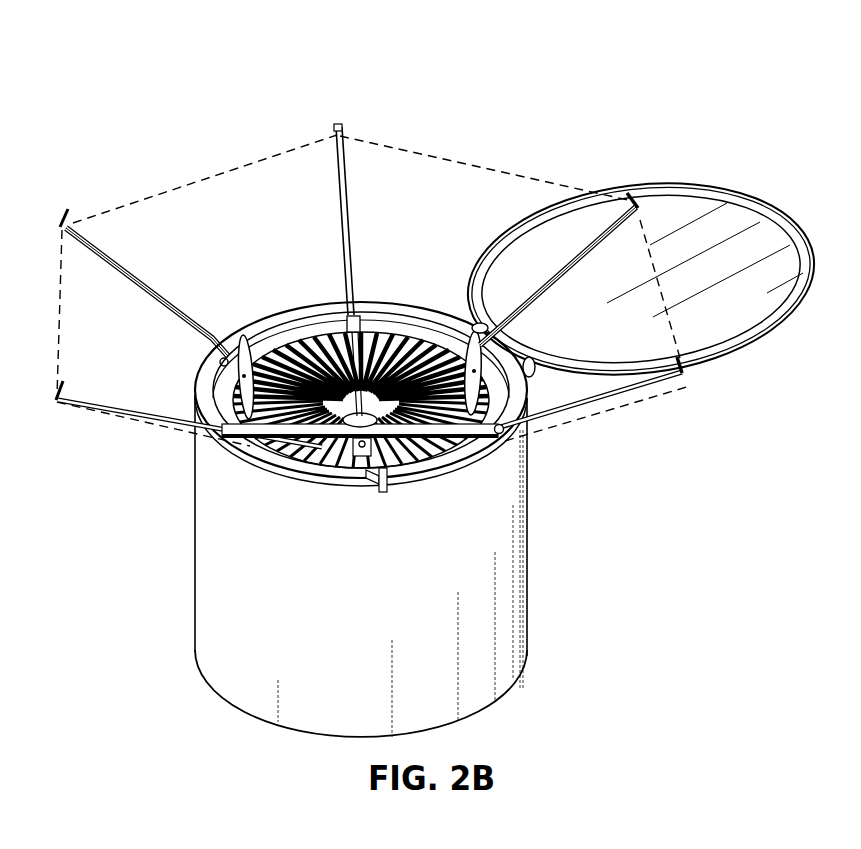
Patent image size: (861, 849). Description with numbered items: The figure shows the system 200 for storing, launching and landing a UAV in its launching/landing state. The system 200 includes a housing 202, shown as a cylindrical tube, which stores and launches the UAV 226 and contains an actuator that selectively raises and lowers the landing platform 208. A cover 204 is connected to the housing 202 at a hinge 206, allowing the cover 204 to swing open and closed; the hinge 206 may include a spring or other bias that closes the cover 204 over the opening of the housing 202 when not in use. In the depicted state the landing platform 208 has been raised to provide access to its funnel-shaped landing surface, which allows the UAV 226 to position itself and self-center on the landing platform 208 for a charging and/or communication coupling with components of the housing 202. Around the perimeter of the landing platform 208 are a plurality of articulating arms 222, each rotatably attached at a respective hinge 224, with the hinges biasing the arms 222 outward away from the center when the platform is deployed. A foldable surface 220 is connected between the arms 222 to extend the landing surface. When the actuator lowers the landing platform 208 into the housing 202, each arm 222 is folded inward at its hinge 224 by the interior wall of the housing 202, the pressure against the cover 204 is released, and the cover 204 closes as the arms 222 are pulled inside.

The system 200 is at (176, 56).
The housing 202 is at (511, 614).
The cover 204 is at (738, 228).
The hinge 206 is at (533, 373).
The landing platform 208 is at (290, 450).
The foldable surface 220 is at (462, 186).
The articulating arms 222 is at (335, 126).
The hinge 224 is at (507, 438).
The UAV 226 is at (338, 392).